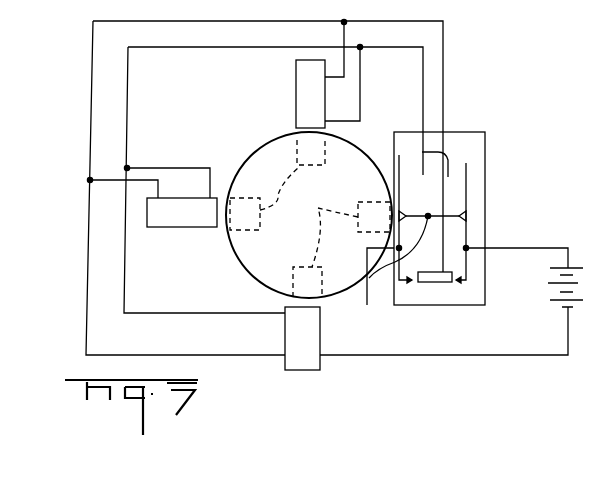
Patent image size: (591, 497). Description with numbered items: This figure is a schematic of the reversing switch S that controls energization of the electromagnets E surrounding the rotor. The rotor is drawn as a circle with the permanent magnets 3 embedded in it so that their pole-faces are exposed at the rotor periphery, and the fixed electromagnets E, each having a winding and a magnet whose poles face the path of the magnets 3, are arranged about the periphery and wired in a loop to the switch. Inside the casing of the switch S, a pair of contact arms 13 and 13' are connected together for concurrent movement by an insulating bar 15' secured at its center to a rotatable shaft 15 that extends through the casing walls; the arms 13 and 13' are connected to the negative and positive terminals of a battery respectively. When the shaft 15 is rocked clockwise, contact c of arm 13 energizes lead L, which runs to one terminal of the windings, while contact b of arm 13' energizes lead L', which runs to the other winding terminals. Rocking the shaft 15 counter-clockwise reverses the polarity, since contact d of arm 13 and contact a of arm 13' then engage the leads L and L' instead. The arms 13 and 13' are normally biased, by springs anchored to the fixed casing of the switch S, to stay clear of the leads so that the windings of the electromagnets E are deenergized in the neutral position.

The permanent magnets 3 is at (284, 179).
The contact arm 13 is at (401, 219).
The contact arm 13' is at (512, 223).
The rotatable shaft 15 is at (379, 259).
The insulating bar 15' is at (472, 198).
The electromagnets E is at (296, 97).
The lead L is at (403, 97).
The lead L' is at (472, 100).
The switch S is at (478, 205).
The contact a is at (402, 284).
The contact b is at (464, 283).
The contact c is at (415, 163).
The contact d is at (457, 163).